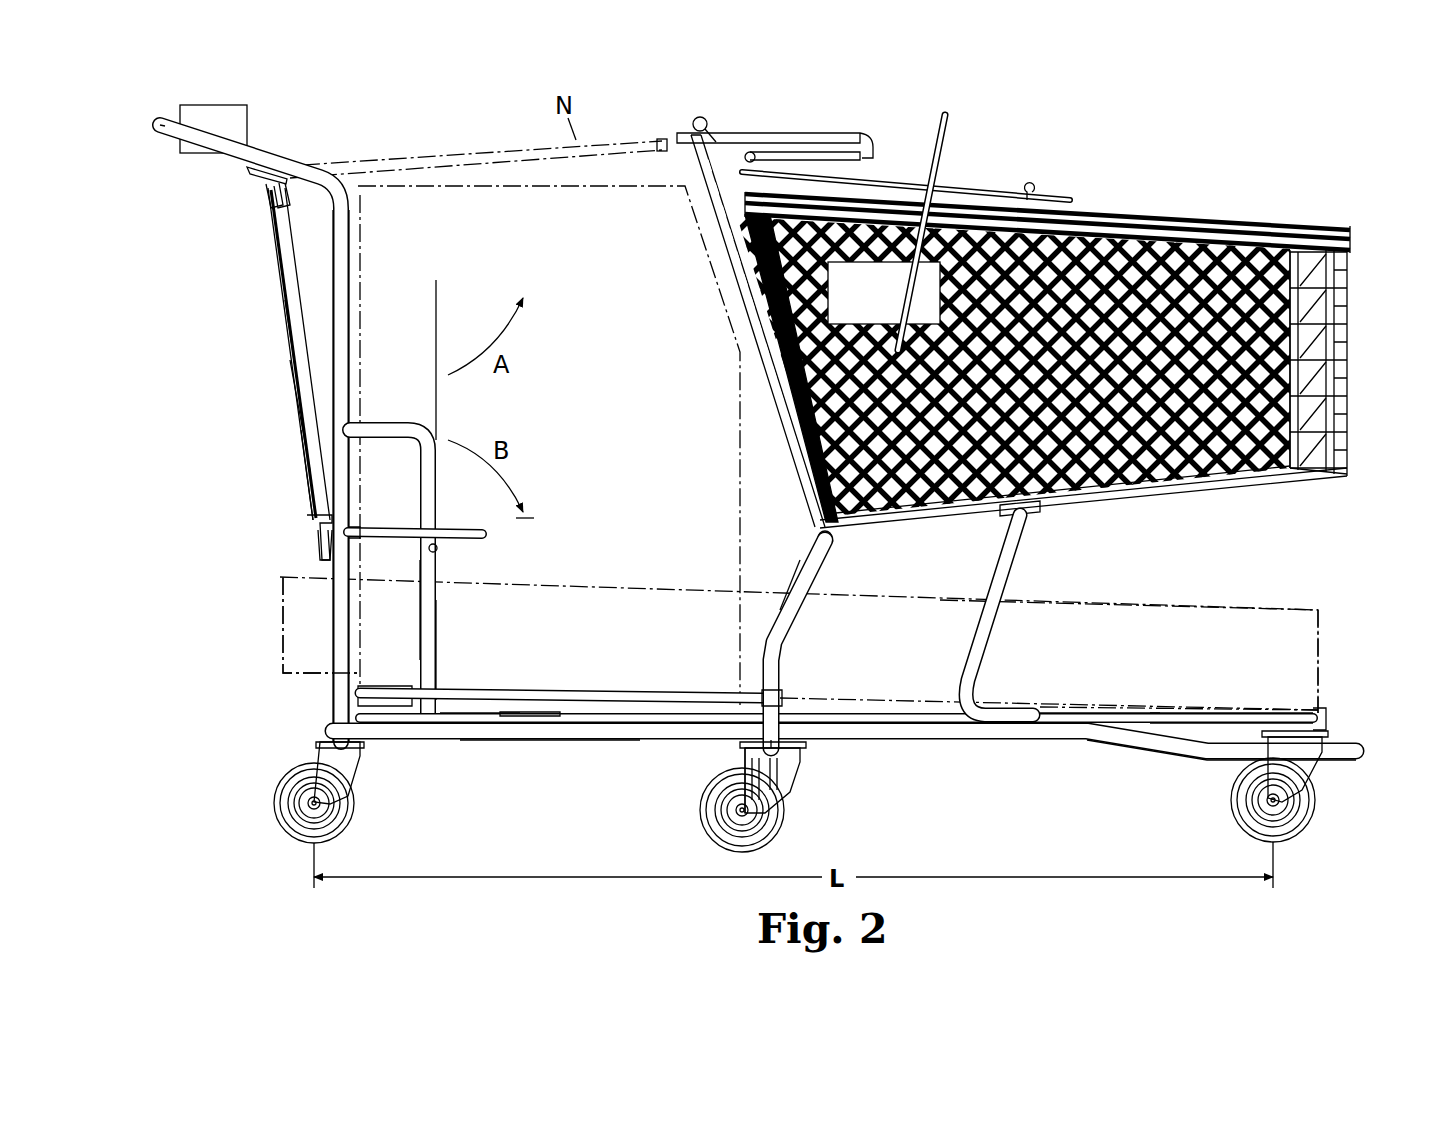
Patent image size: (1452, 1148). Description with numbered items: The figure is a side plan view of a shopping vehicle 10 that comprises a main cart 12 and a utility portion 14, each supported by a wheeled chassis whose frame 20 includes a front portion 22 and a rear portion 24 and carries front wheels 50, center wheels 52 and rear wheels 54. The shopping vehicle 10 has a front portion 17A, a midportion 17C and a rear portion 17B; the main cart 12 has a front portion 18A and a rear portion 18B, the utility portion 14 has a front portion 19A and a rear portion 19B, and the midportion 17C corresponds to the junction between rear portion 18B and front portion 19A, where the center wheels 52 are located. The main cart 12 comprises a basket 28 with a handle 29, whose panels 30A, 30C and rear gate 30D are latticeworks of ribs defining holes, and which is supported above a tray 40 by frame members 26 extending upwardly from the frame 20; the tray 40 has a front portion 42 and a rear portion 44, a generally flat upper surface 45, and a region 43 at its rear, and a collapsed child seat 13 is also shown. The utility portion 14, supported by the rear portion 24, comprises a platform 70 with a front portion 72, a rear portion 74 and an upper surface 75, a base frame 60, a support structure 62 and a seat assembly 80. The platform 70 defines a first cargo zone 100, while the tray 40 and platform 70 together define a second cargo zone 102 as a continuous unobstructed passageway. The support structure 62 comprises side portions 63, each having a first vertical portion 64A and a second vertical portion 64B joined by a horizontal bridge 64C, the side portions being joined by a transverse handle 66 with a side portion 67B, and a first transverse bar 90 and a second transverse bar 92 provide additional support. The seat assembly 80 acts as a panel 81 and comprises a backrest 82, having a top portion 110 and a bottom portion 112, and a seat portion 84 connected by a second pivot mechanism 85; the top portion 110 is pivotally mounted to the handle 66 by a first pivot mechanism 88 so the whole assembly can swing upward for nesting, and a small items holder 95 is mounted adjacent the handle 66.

The shopping vehicle 10 is at (927, 115).
The main cart 12 is at (1087, 744).
The child seat 13 is at (797, 134).
The utility portion 14 is at (548, 743).
The front portion 17A is at (1352, 464).
The rear portion 17B is at (298, 432).
The midportion 17C is at (796, 752).
The front portion 18A is at (1346, 760).
The rear portion 18B is at (796, 770).
The front portion 19A is at (744, 750).
The rear portion 19B is at (356, 750).
The frame 20 is at (1181, 762).
The front portion 22 is at (983, 727).
The rear portion 24 is at (475, 741).
The frame members 26 is at (795, 604).
The basket 28 is at (917, 306).
The handle 29 is at (697, 117).
The panel 30A is at (1157, 232).
The panel 30C is at (1350, 298).
The rear gate 30D is at (790, 442).
The tray 40 is at (1213, 710).
The front portion 42 is at (1322, 718).
The rail segment 43 is at (1120, 712).
The rear portion 44 is at (792, 702).
The upper surface 45 is at (1178, 710).
The front wheels 50 is at (1306, 836).
The center wheels 52 is at (780, 828).
The rear wheels 54 is at (277, 806).
The base frame 60 is at (432, 740).
The support structure 62 is at (442, 650).
The side portions 63 is at (330, 626).
The first vertical portion 64A is at (432, 610).
The second vertical portion 64B is at (349, 246).
The upper portion 64C is at (386, 426).
The handle 66 is at (156, 132).
The side portion 67B is at (262, 168).
The platform 70 is at (598, 728).
The front portion 72 is at (792, 695).
The rear portion 74 is at (367, 685).
The upper surface 75 is at (680, 690).
The seat assembly 80 is at (283, 330).
The panel 81 is at (294, 372).
The backrest 82 is at (283, 291).
The seat portion 84 is at (456, 527).
The second pivot mechanism 85 is at (356, 526).
The first pivot mechanism 88 is at (306, 160).
The first transverse bar 90 is at (440, 550).
The second transverse bar 92 is at (312, 518).
The small items holder 95 is at (222, 105).
The first cargo zone 100 is at (712, 298).
The second cargo zone 102 is at (1278, 606).
The top portion 110 is at (268, 190).
The bottom portion 112 is at (318, 545).